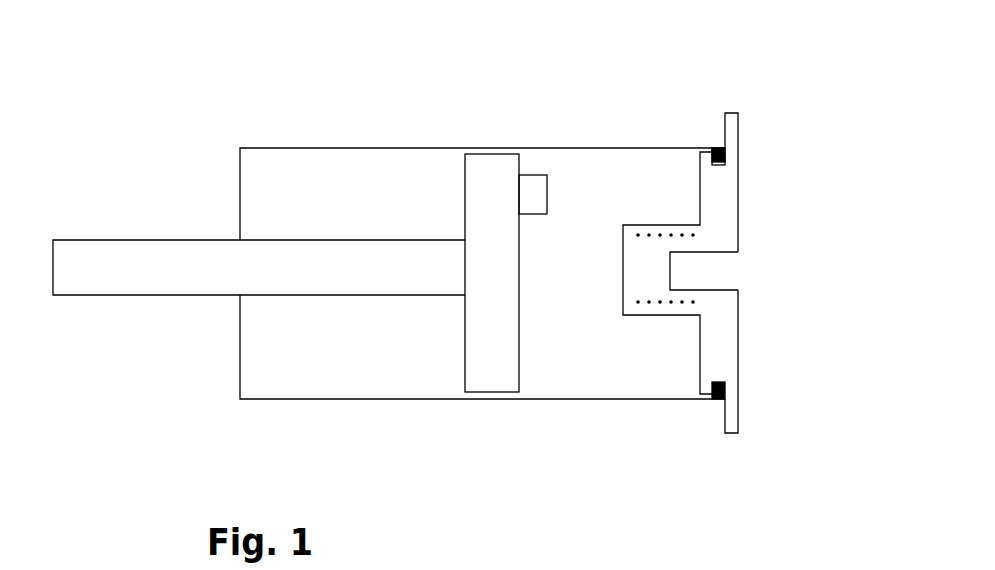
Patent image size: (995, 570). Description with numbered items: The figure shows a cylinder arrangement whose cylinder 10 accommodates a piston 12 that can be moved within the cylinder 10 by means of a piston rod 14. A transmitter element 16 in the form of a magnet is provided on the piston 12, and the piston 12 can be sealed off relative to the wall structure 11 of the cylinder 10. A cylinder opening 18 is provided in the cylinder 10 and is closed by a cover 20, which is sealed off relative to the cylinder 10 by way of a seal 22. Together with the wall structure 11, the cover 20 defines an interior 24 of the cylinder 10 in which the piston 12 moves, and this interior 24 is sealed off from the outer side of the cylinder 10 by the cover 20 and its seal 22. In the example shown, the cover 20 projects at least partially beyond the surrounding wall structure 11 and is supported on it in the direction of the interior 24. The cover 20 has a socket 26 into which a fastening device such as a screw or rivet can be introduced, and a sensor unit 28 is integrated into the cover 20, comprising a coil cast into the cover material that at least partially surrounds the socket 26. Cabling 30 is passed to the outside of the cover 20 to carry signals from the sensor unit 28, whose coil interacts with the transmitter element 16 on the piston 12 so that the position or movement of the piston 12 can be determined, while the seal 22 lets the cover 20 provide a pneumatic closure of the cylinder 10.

The cylinder 10 is at (372, 118).
The wall structure 11 is at (448, 148).
The piston 12 is at (502, 362).
The piston rod 14 is at (160, 270).
The transmitter element 16 is at (538, 188).
The cylinder opening 18 is at (689, 184).
The cover 20 is at (722, 218).
The seal 22 is at (718, 401).
The interior 24 is at (605, 360).
The socket 26 is at (715, 273).
The sensor unit 28 is at (675, 302).
The cabling 30 is at (697, 302).